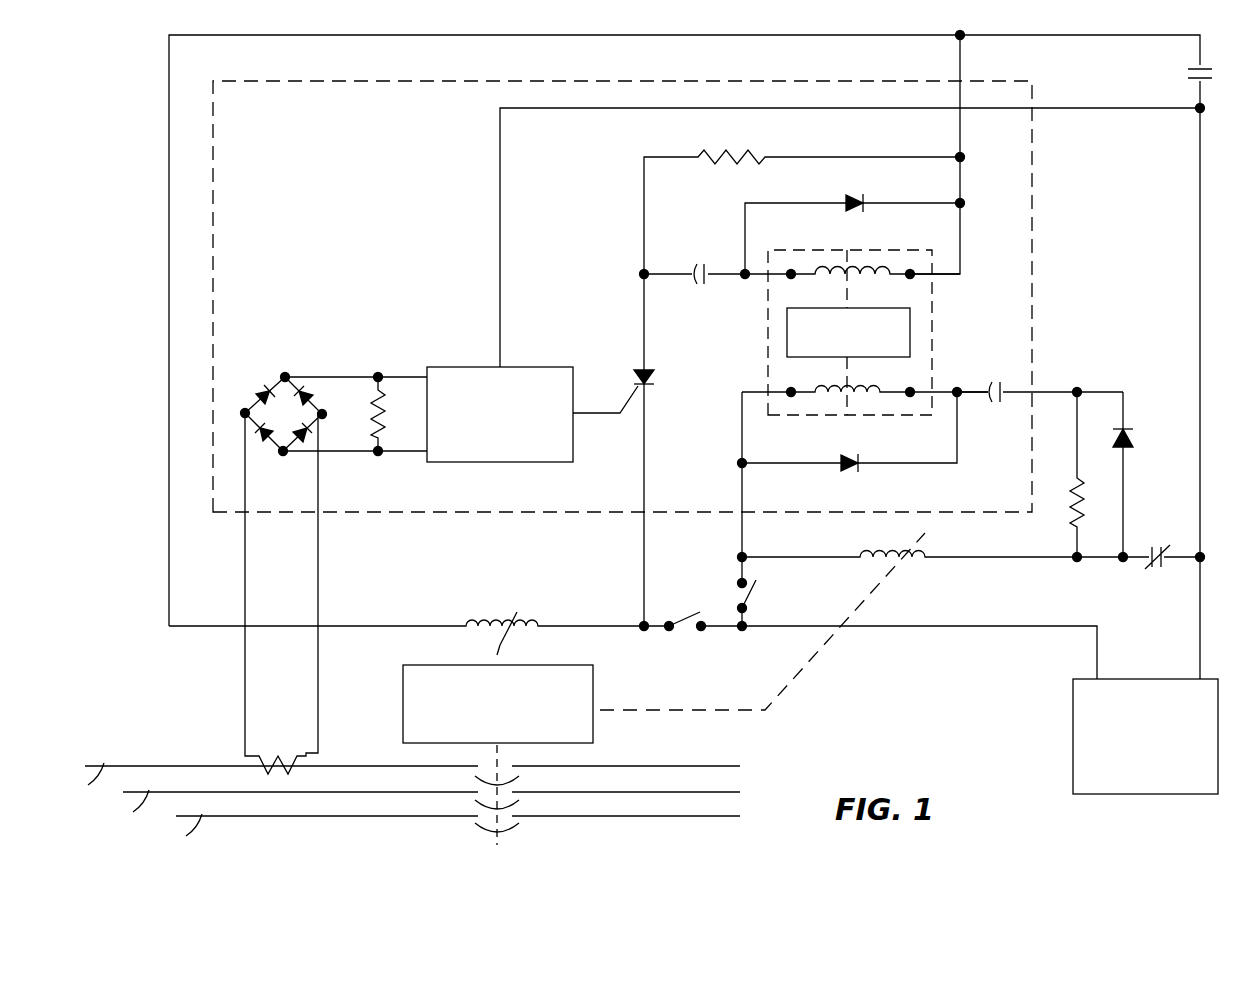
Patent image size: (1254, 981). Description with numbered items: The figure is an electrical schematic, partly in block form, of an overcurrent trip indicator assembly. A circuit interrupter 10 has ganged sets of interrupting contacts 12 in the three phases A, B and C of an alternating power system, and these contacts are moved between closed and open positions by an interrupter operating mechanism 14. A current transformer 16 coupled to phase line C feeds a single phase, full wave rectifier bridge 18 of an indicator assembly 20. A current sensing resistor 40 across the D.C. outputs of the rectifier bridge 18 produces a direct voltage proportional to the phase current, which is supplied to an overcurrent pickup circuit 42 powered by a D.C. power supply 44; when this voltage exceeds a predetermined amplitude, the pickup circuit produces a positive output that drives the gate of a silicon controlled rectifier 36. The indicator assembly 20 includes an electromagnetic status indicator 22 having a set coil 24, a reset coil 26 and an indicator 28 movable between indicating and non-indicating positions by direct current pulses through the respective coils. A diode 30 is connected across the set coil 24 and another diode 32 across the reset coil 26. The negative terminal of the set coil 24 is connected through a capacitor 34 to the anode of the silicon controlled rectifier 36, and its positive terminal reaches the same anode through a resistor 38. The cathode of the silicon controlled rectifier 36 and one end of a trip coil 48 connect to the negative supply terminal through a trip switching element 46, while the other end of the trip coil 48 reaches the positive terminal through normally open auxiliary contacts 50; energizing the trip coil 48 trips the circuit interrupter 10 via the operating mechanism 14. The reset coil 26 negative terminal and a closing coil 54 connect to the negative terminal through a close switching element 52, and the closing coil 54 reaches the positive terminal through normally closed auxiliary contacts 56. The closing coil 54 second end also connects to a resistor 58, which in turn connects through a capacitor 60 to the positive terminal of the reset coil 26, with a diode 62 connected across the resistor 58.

The circuit interrupter 10 is at (564, 767).
The interrupting contacts 12 is at (508, 838).
The interrupter operating mechanism 14 is at (593, 700).
The current transformer 16 is at (281, 593).
The rectifier bridge 18 is at (292, 479).
The indicator assembly 20 is at (1032, 226).
The electromagnetic status indicator 22 is at (768, 322).
The set coil 24 is at (838, 268).
The reset coil 26 is at (843, 400).
The indicator 28 is at (910, 334).
The diode 30 is at (852, 223).
The diode 32 is at (848, 487).
The capacitor 34 is at (694, 261).
The silicon controlled rectifier 36 is at (627, 450).
The resistor 38 is at (802, 202).
The current sensing resistor 40 is at (355, 414).
The overcurrent pickup circuit 42 is at (532, 367).
The D.C. power supply 44 is at (1130, 681).
The trip switching element 46 is at (693, 613).
The trip coil 48 is at (406, 625).
The auxiliary contacts 50 is at (1214, 73).
The close switching element 52 is at (757, 603).
The closing coil 54 is at (900, 545).
The auxiliary contacts 56 is at (1161, 546).
The resistor 58 is at (1090, 477).
The capacitor 60 is at (1040, 380).
The diode 62 is at (1135, 477).